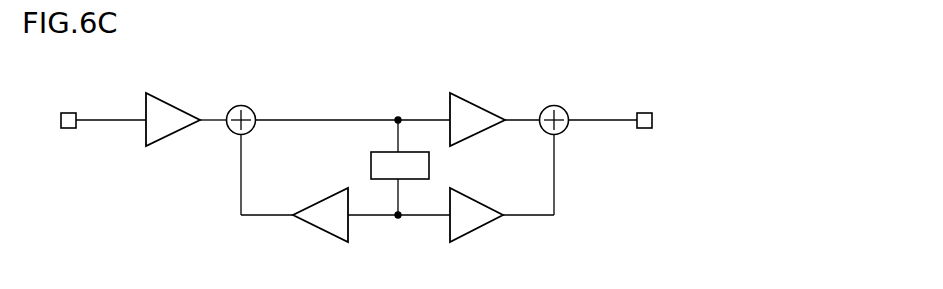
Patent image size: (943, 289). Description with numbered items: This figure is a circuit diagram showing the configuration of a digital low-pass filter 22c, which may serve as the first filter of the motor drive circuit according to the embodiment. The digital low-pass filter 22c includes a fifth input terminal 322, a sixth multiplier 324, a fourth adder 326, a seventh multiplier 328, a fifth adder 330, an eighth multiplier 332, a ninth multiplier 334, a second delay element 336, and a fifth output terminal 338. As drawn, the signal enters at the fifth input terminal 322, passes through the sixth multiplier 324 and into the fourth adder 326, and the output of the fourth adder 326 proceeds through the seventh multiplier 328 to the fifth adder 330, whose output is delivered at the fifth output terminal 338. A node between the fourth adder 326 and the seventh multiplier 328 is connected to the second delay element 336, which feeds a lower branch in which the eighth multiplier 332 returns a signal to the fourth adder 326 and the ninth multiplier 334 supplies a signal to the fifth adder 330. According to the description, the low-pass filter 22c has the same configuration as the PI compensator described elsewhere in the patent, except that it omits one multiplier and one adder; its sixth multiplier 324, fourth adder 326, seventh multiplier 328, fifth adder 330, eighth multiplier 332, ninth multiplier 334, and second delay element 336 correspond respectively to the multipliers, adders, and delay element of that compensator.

The fifth input terminal 322 is at (76, 113).
The sixth multiplier 324 is at (187, 87).
The fourth adder 326 is at (250, 108).
The seventh multiplier 328 is at (492, 87).
The fifth adder 330 is at (562, 108).
The eighth multiplier 332 is at (303, 226).
The ninth multiplier 334 is at (495, 226).
The second delay element 336 is at (429, 165).
The fifth output terminal 338 is at (651, 113).
The digital low-pass filter 22c is at (743, 117).